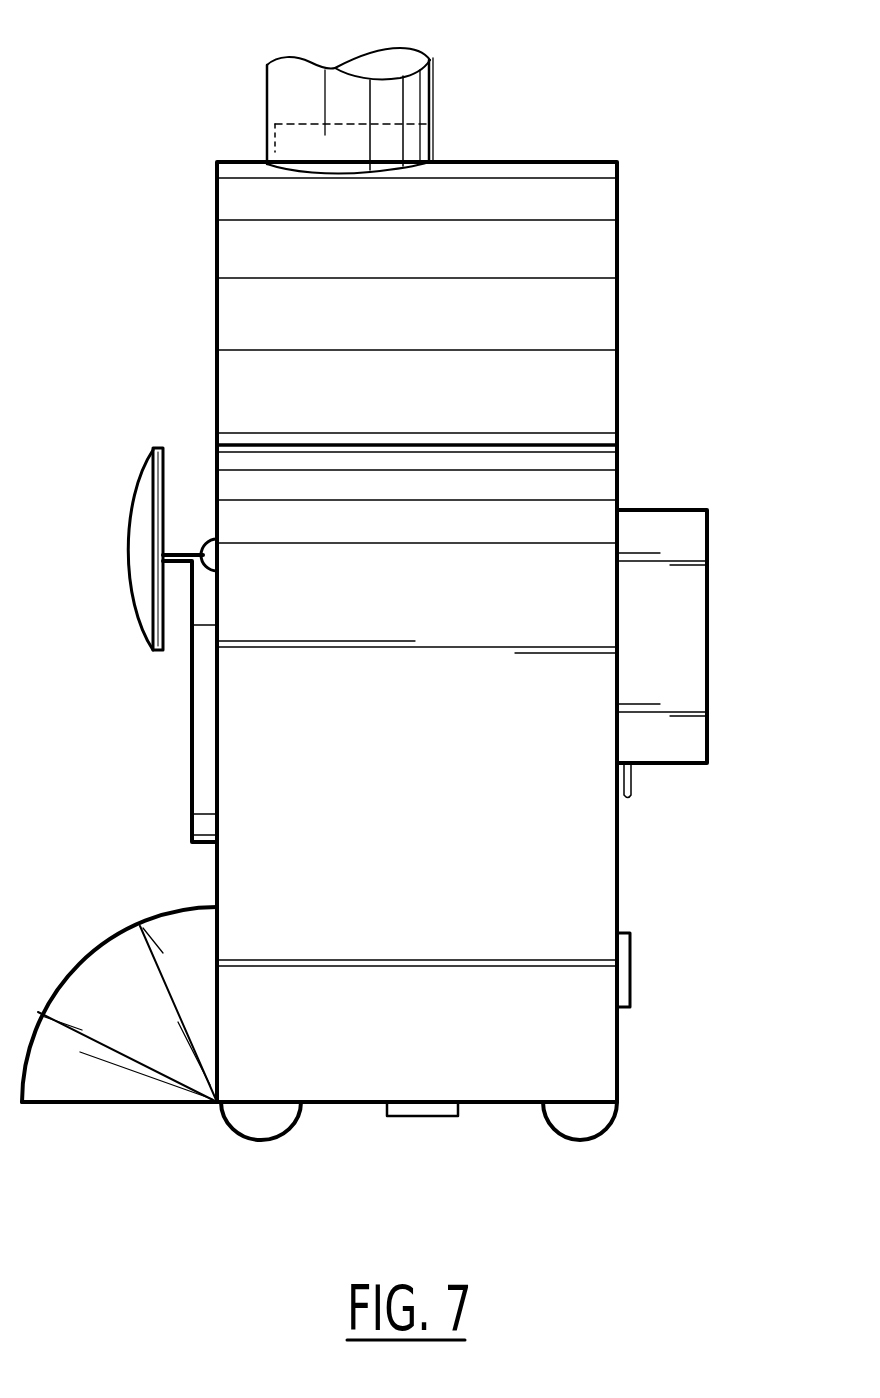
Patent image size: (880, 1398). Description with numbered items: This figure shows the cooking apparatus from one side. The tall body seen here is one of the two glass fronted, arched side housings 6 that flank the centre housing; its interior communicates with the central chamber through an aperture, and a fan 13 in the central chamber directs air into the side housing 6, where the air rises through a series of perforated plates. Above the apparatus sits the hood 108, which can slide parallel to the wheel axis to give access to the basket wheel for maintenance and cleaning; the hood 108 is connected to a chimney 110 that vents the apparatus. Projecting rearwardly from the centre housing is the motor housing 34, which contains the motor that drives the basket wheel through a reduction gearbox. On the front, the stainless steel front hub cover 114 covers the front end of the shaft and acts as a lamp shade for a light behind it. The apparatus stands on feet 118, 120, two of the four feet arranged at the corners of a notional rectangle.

The side housing 6 is at (592, 483).
The fan 13 is at (625, 952).
The motor housing 34 is at (693, 545).
The hood 108 is at (588, 263).
The chimney 110 is at (283, 75).
The front hub cover 114 is at (138, 482).
The foot 118 is at (253, 1127).
The foot 120 is at (590, 1127).